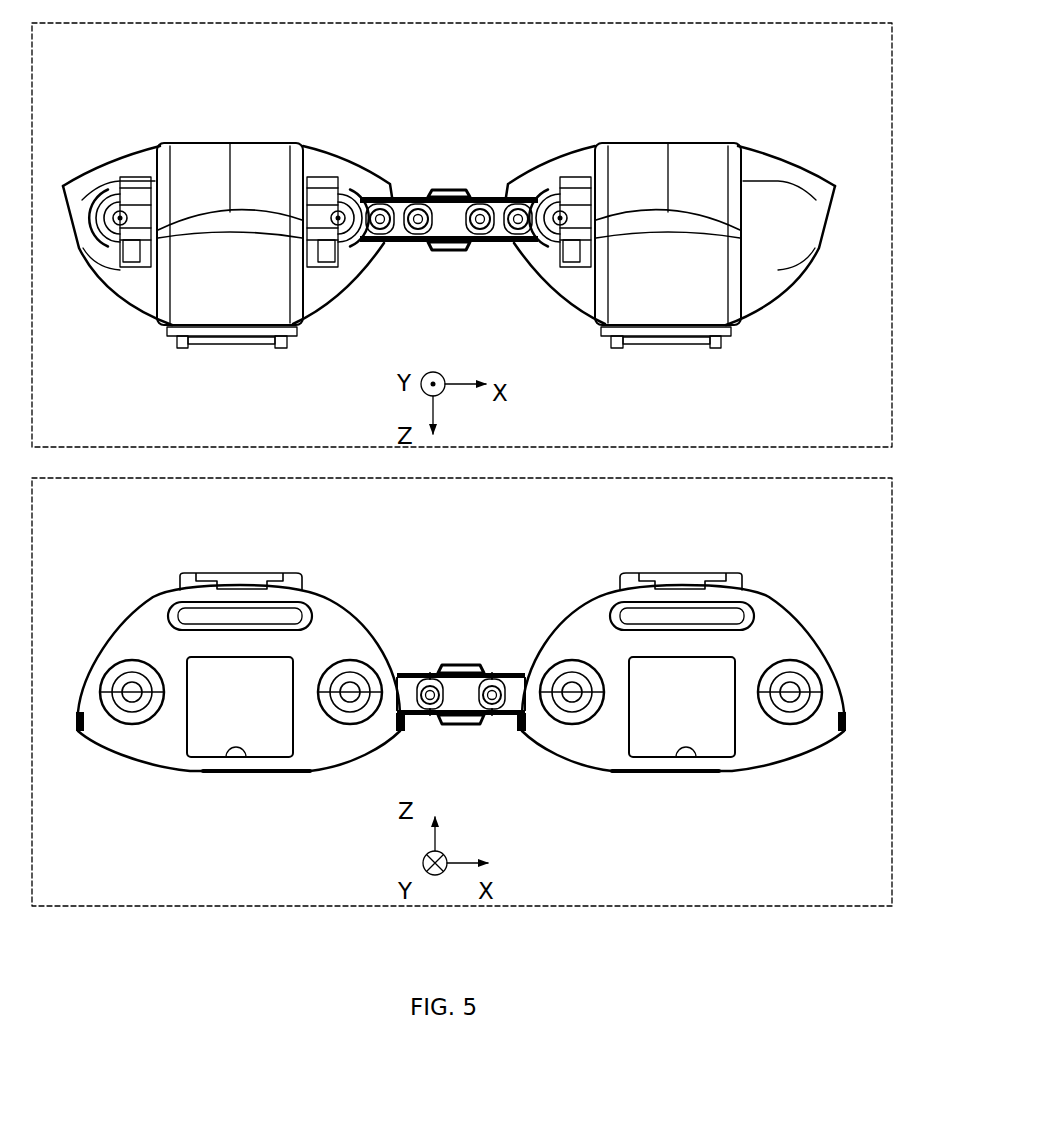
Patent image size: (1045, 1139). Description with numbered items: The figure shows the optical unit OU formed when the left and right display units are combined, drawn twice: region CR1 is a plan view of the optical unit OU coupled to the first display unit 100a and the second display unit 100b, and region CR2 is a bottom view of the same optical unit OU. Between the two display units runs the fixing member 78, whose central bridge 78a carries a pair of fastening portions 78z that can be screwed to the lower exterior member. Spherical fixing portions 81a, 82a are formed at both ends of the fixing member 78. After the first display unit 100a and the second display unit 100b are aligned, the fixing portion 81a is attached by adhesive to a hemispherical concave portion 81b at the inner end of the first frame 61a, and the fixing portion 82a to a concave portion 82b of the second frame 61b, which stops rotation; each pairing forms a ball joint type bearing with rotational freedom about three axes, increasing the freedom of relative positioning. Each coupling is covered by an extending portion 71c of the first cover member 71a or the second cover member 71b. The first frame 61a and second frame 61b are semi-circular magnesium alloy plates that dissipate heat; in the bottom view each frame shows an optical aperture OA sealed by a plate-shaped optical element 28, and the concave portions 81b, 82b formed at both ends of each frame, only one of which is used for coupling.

The first display unit 100a is at (133, 131).
The second display unit 100b is at (765, 131).
The first frame 61a is at (317, 160).
The second frame 61b is at (581, 160).
The first cover member 71a is at (245, 160).
The second cover member 71b is at (653, 160).
The extending portion 71c is at (345, 262).
The fixing portion 81a is at (365, 176).
The fixing portion 82a is at (532, 176).
The fixing member 78 is at (448, 172).
The fastening portions 78z is at (420, 243).
The bridge 78a is at (448, 228).
The concave portion 81b is at (125, 702).
The concave portion 82b is at (579, 705).
The plate-shaped optical element 28 is at (207, 733).
The optical aperture OA is at (230, 760).
The optical unit OU is at (427, 132).
The region CR1 is at (893, 96).
The region CR2 is at (893, 550).